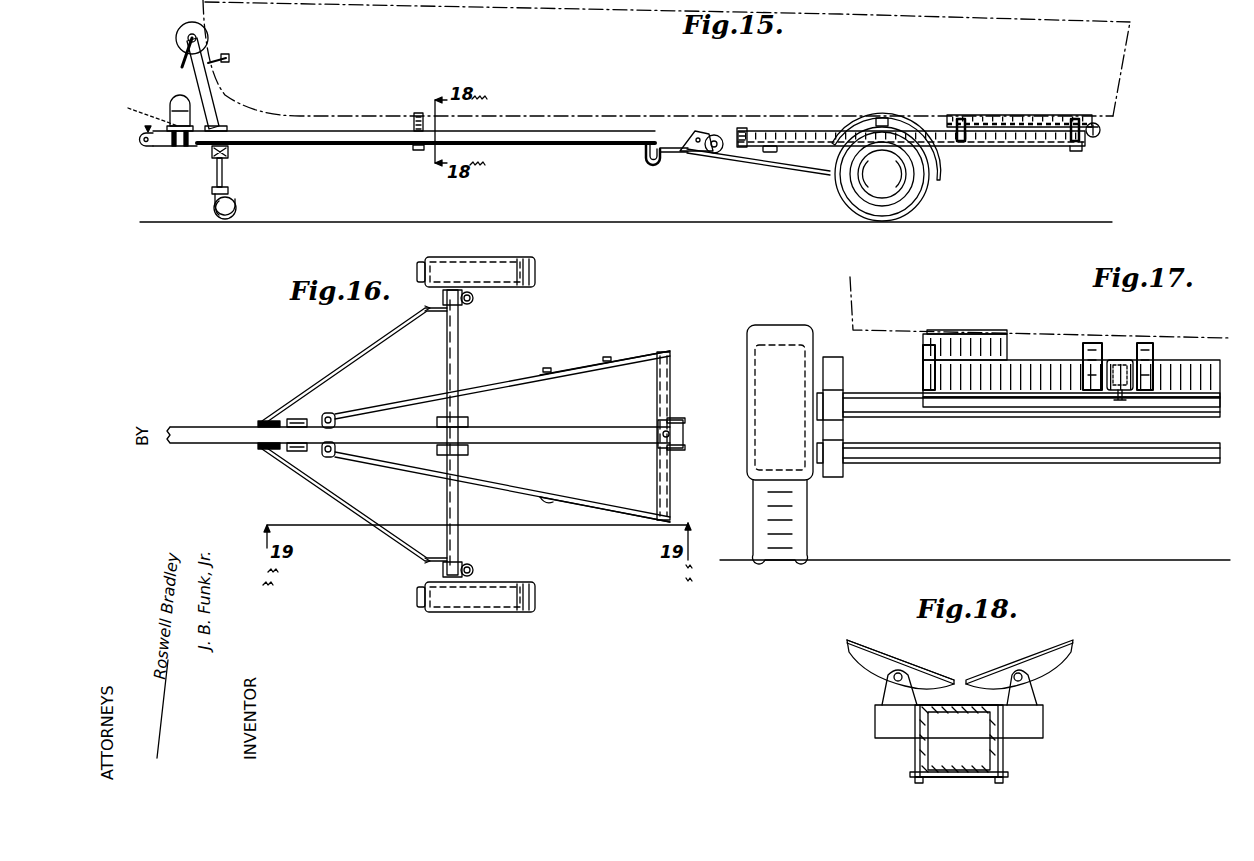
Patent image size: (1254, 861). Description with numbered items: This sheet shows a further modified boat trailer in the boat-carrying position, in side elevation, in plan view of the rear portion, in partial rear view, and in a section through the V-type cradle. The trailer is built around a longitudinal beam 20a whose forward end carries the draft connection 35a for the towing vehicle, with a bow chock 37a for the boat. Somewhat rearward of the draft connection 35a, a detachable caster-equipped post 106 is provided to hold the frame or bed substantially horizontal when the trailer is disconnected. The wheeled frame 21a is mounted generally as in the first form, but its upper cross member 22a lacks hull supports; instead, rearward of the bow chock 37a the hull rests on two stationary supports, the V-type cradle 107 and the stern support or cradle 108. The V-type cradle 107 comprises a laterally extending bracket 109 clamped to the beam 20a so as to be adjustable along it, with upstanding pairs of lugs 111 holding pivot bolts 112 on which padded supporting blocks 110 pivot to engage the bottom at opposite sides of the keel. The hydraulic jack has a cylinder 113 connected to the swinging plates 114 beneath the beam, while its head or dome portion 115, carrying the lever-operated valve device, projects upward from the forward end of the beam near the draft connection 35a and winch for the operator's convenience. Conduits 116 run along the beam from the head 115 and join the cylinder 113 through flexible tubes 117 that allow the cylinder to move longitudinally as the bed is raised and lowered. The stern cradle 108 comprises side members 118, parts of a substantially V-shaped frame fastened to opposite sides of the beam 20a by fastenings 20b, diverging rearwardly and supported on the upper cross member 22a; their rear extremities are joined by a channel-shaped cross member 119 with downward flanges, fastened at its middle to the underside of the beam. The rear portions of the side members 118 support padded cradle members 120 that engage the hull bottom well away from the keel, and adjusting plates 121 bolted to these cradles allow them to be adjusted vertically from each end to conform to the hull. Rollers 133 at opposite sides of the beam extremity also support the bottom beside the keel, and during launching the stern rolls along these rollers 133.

In FIG. 15, the longitudinal beam 20a is at (562, 131).
In FIG. 16, the longitudinal beam 20a is at (220, 433).
In FIG. 17, the longitudinal beam 20a is at (1120, 360).
In FIG. 15, the fastenings 20b is at (745, 128).
In FIG. 16, the fastenings 20b is at (327, 414).
In FIG. 16, the wheeled frame 21a is at (474, 300).
In FIG. 17, the wheeled frame 21a is at (841, 476).
In FIG. 16, the upper cross member 22a is at (458, 360).
In FIG. 17, the upper cross member 22a is at (878, 403).
In FIG. 15, the draft connection 35a is at (147, 146).
In FIG. 15, the bow chock 37a is at (229, 60).
In FIG. 15, the caster-equipped post 106 is at (222, 172).
In FIG. 15, the V-type cradle 107 is at (412, 111).
In FIG. 18, the V-type cradle 107 is at (880, 648).
In FIG. 15, the stern support or cradle 108 is at (1020, 100).
In FIG. 16, the stern support or cradle 108 is at (583, 371).
In FIG. 17, the stern support or cradle 108 is at (960, 329).
In FIG. 18, the laterally extending bracket 109 is at (1046, 718).
In FIG. 18, the supporting blocks 110 is at (1060, 660).
In FIG. 18, the lugs 111 is at (1040, 692).
In FIG. 18, the pivot bolts 112 is at (1018, 672).
In FIG. 15, the cylinder 113 is at (676, 155).
In FIG. 16, the cylinder 113 is at (354, 434).
In FIG. 15, the swinging plates 114 is at (697, 131).
In FIG. 16, the swinging plates 114 is at (265, 421).
In FIG. 15, the head or dome portion 115 is at (171, 104).
In FIG. 15, the conduits 116 is at (360, 146).
In FIG. 15, the flexible tubes 117 is at (650, 163).
In FIG. 15, the side members 118 is at (803, 131).
In FIG. 16, the side members 118 is at (405, 406).
In FIG. 17, the side members 118 is at (1045, 360).
In FIG. 15, the cross member 119 is at (1075, 150).
In FIG. 16, the cross member 119 is at (663, 400).
In FIG. 17, the cross member 119 is at (1060, 405).
In FIG. 15, the cradle members 120 is at (968, 120).
In FIG. 16, the cradle members 120 is at (625, 360).
In FIG. 17, the cradle members 120 is at (985, 340).
In FIG. 16, the adjusting plates 121 is at (553, 502).
In FIG. 15, the rollers 133 is at (1097, 137).